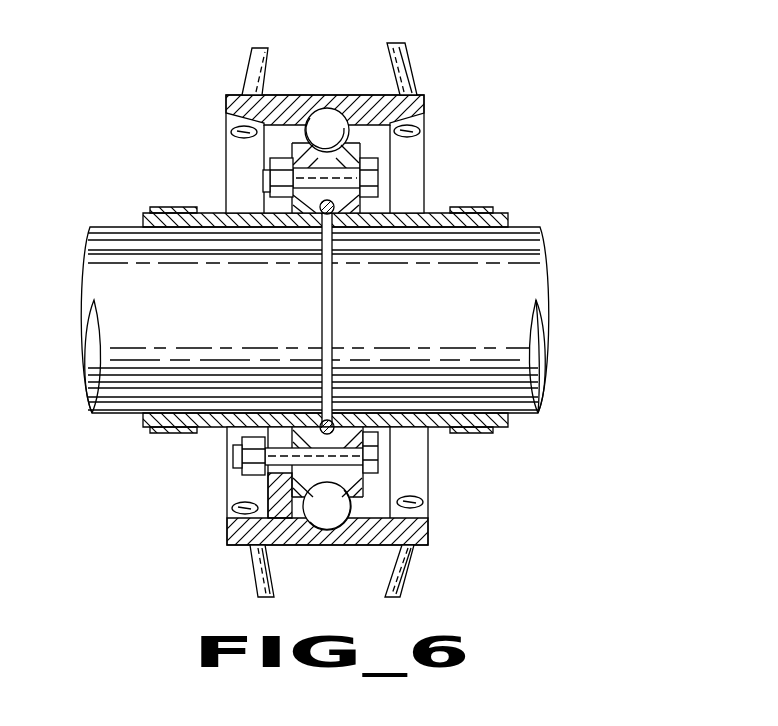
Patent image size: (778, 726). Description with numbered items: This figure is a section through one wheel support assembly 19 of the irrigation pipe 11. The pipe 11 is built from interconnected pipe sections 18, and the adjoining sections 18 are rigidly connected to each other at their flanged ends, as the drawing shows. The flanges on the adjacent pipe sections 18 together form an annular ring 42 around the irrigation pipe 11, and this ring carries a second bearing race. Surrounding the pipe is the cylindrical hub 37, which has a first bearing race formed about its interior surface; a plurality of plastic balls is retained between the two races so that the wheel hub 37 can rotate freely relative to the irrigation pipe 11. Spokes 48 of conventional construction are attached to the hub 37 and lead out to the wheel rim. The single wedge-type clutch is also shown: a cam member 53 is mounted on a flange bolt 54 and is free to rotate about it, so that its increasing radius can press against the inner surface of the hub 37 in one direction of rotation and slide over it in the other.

The irrigation pipe 11 is at (548, 282).
The pipe sections 18 is at (283, 323).
The wheel support assembly 19 is at (355, 132).
The cylindrical hub 37 is at (428, 103).
The annular ring 42 is at (324, 508).
The spokes 48 is at (250, 55).
The cam member 53 is at (282, 518).
The flange bolt 54 is at (233, 458).